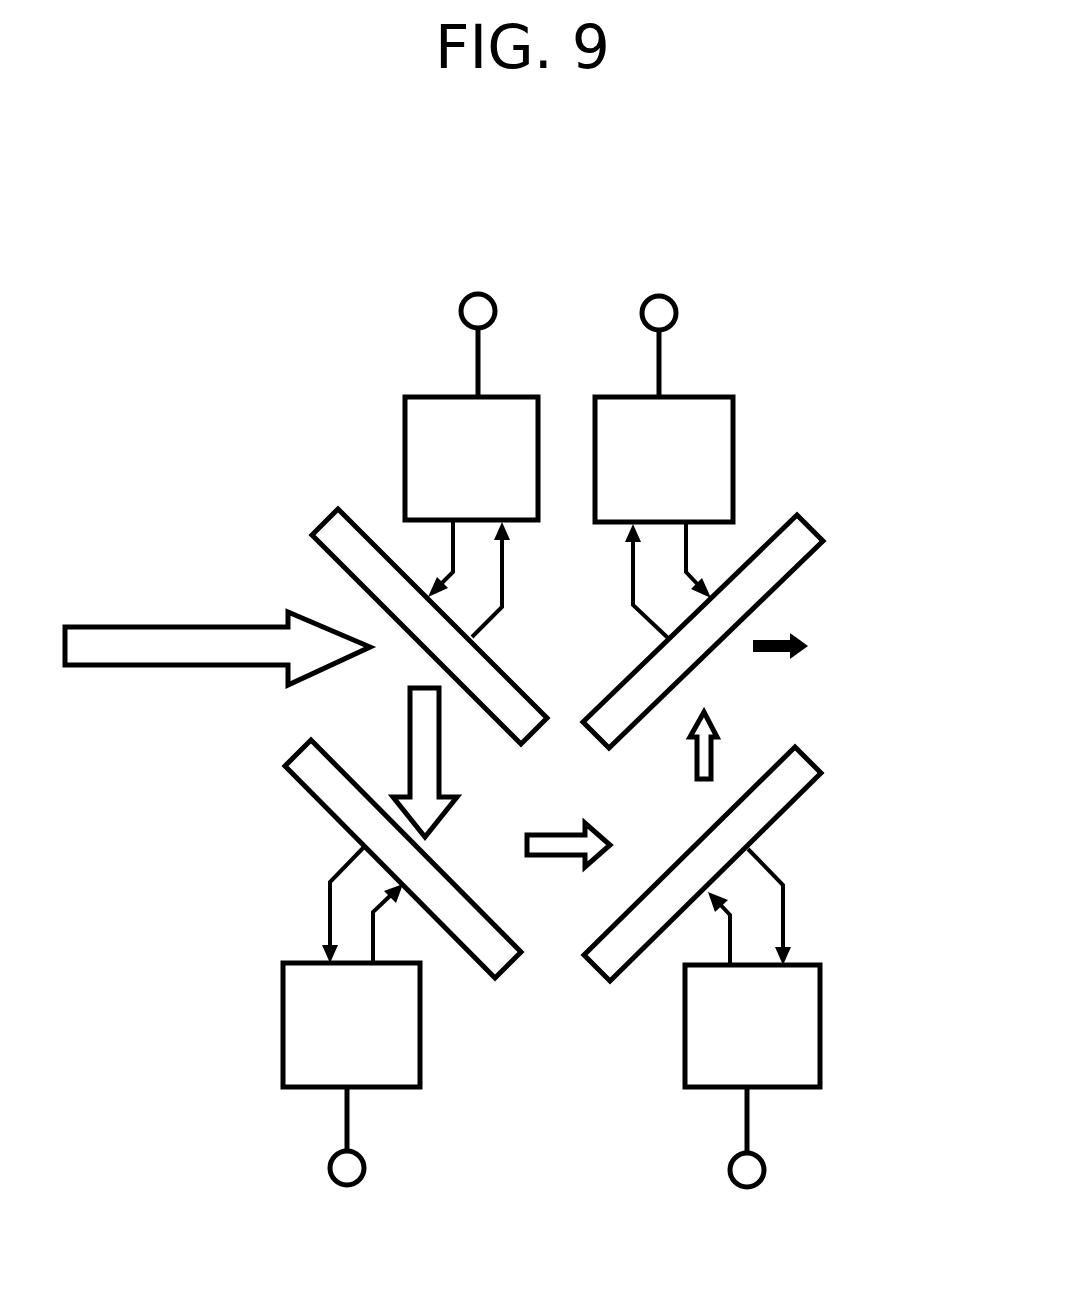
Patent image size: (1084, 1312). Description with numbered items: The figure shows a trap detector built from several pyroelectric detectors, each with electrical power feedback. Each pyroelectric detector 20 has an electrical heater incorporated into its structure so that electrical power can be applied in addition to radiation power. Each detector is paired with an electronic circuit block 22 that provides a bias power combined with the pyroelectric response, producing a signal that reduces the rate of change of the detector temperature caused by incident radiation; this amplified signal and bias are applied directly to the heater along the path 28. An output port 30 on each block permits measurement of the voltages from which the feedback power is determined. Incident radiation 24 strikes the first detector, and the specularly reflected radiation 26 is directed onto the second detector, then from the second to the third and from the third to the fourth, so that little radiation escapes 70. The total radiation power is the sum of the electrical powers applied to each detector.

The pyroelectric detector 20 is at (342, 510).
The electronic circuit block 22 is at (528, 397).
The incident radiation 24 is at (218, 622).
The reflected radiation 26 is at (410, 718).
The path 28 is at (450, 565).
The output port 30 is at (463, 297).
The transmitted light beam 70 is at (767, 653).